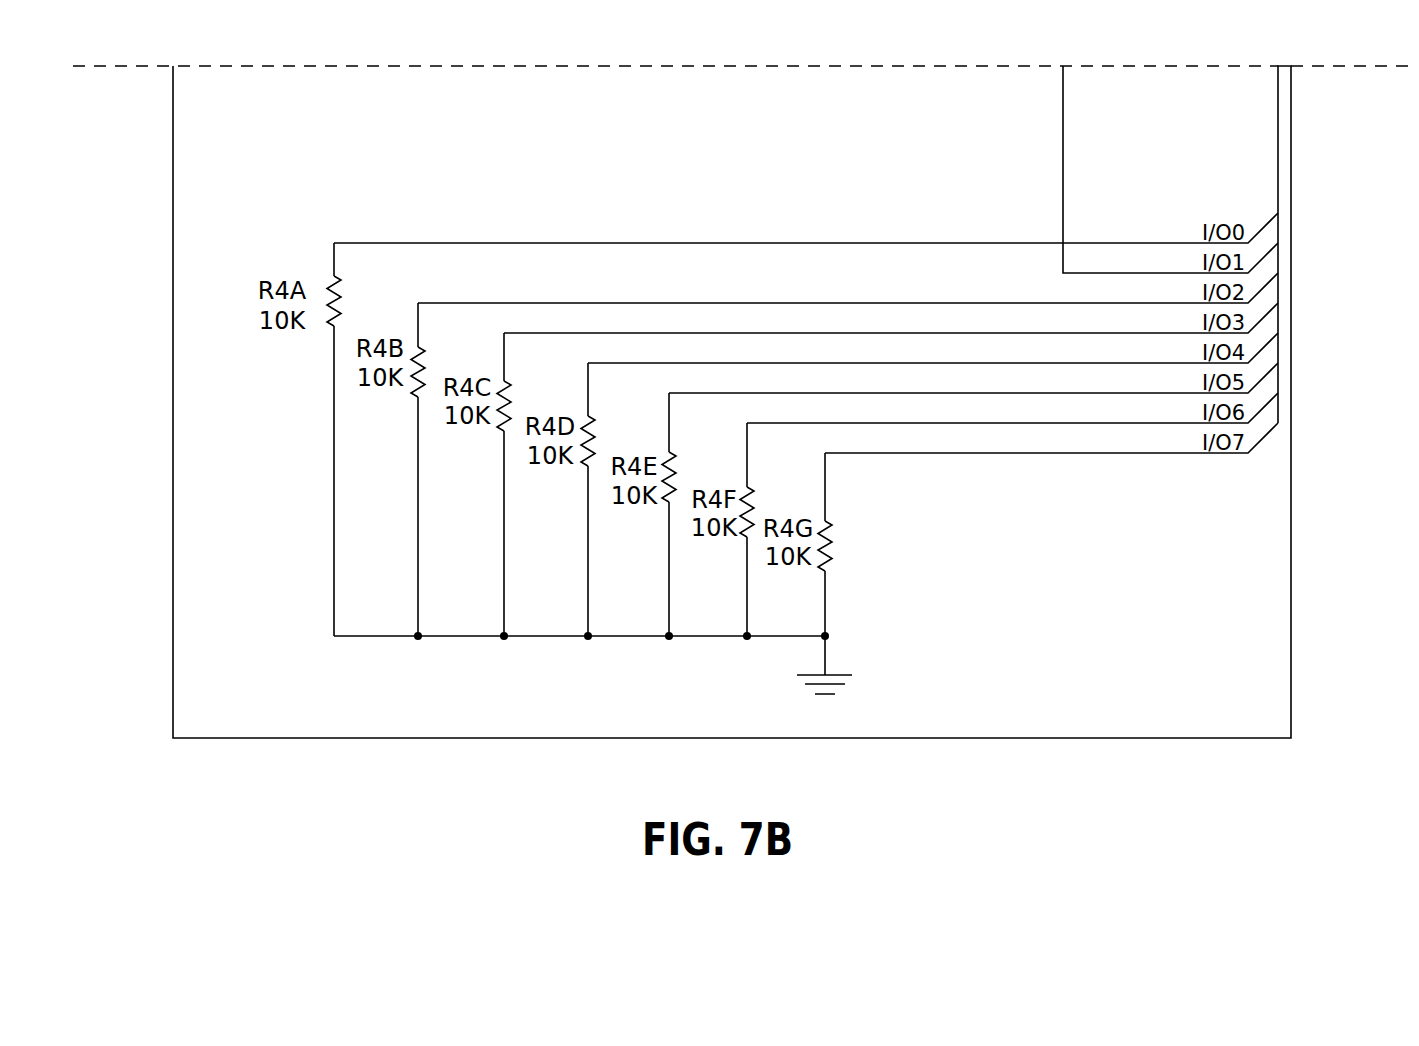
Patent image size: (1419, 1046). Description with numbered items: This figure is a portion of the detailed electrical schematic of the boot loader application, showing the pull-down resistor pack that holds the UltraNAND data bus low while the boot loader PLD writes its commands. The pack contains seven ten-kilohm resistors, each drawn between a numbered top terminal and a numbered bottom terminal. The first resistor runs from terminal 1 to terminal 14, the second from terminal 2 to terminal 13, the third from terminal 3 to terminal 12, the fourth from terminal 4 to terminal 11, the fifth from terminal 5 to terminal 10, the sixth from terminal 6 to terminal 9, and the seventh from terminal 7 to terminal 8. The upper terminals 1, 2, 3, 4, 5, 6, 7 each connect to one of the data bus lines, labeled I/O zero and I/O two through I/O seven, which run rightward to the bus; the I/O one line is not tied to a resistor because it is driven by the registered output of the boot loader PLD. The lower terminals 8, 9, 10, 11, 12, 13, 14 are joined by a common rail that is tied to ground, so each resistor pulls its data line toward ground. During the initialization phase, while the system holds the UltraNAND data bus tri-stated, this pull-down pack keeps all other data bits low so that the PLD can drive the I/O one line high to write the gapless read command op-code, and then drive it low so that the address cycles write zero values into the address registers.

The resistor network R4 pin 1 (R4A, to I/O0) 1 is at (323, 278).
The resistor network R4 pin 2 (R4B, to I/O2) 2 is at (410, 348).
The resistor network R4 pin 3 (R4C, to I/O3) 3 is at (495, 382).
The resistor network R4 pin 4 (R4D, to I/O4) 4 is at (581, 414).
The resistor network R4 pin 5 (R4E, to I/O5) 5 is at (662, 447).
The resistor network R4 pin 6 (R4F, to I/O6) 6 is at (739, 480).
The resistor network R4 pin 7 (R4G, to I/O7) 7 is at (816, 512).
The resistor network R4 pin 8 (R4G, to ground) 8 is at (812, 603).
The resistor network R4 pin 9 (R4F, to ground) 9 is at (736, 586).
The resistor network R4 pin 10 (R4E, to ground) 10 is at (652, 569).
The resistor network R4 pin 11 (R4D, to ground) 11 is at (570, 551).
The resistor network R4 pin 12 (R4C, to ground) 12 is at (486, 533).
The resistor network R4 pin 13 (R4B, to ground) 13 is at (400, 516).
The resistor network R4 pin 14 (R4A, to ground) 14 is at (313, 481).